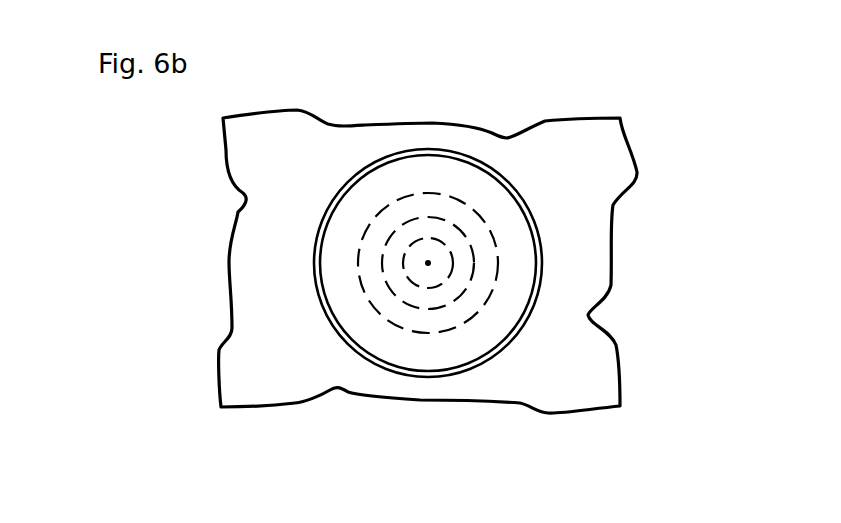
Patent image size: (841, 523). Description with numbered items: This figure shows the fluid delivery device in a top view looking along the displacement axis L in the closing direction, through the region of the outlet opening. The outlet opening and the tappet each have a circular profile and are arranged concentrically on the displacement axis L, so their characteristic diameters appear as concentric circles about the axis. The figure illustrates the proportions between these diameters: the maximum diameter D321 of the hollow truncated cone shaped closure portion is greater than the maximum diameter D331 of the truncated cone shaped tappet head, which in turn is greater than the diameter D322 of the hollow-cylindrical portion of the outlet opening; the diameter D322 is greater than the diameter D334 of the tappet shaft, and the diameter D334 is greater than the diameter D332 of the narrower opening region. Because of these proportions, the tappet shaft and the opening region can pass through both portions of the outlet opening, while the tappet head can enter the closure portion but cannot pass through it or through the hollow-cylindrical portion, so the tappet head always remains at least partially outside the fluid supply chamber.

The maximum diameter of the hollow truncated cone shaped closure portion D321 is at (542, 262).
The diameter of the hollow-cylindrical portion D322 is at (497, 243).
The maximum diameter of the tappet head D331 is at (323, 262).
The diameter of the opening region D332 is at (430, 239).
The diameter of the tappet shaft D334 is at (430, 305).
The displacement axis L is at (428, 263).